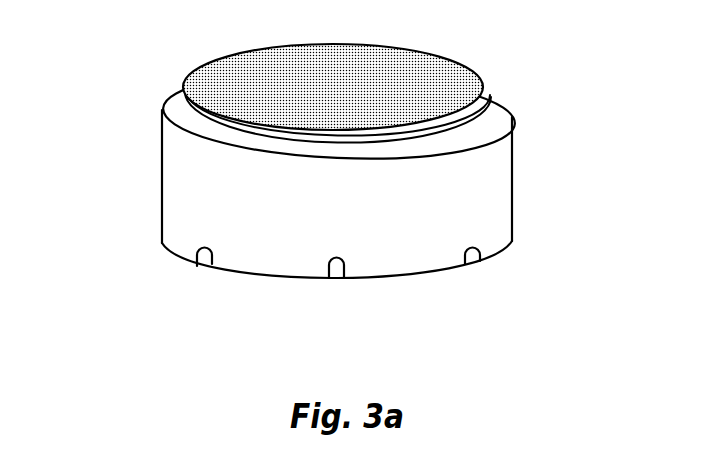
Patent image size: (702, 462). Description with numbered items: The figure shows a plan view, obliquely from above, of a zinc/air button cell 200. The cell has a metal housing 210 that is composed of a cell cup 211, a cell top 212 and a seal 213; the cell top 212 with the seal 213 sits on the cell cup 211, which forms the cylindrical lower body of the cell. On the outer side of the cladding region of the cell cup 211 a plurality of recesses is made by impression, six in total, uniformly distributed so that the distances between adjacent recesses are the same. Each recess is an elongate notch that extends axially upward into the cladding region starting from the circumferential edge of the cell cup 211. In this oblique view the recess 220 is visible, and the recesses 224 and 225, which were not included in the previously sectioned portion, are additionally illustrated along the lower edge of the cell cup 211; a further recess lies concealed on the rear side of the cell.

The zinc/air button cell 200 is at (476, 62).
The metal housing 210 is at (513, 133).
The cell cup 211 is at (227, 200).
The cell top 212 is at (263, 93).
The seal 213 is at (232, 137).
The recess 220 is at (203, 260).
The recess 224 is at (338, 267).
The recess 225 is at (469, 257).